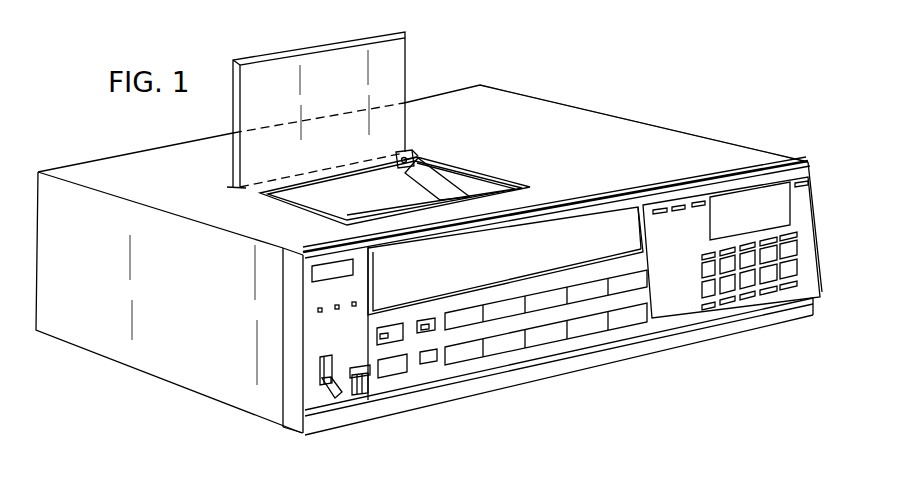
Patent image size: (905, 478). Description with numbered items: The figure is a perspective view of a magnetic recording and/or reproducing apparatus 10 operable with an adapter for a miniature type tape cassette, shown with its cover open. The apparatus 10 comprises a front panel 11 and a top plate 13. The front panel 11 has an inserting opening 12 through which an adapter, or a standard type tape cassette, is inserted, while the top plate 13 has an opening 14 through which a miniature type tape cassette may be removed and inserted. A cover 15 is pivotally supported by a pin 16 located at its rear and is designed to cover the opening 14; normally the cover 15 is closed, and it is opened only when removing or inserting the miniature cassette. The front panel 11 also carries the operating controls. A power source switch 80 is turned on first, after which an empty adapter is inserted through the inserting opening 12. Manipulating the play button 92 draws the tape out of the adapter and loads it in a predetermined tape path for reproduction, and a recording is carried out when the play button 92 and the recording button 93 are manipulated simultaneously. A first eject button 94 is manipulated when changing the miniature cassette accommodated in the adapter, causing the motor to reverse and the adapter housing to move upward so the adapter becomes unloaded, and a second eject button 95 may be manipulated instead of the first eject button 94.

The magnetic recording and/or reproducing apparatus 10 is at (592, 90).
The front panel 11 is at (677, 313).
The inserting opening 12 is at (467, 278).
The top plate 13 is at (693, 146).
The opening 14 is at (428, 192).
The cover 15 is at (281, 62).
The pin 16 is at (405, 156).
The power source switch 80 is at (335, 398).
The play button 92 is at (512, 312).
The recording button 93 is at (592, 293).
The first eject button 94 is at (393, 374).
The second eject button 95 is at (428, 365).